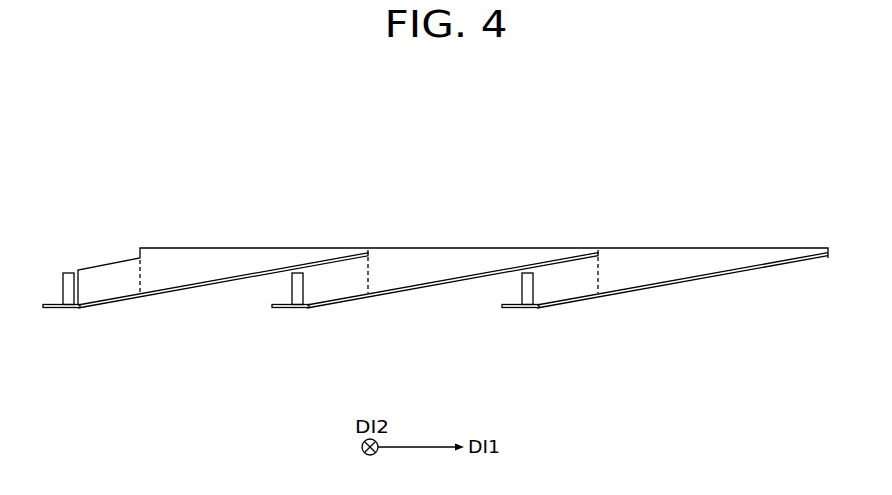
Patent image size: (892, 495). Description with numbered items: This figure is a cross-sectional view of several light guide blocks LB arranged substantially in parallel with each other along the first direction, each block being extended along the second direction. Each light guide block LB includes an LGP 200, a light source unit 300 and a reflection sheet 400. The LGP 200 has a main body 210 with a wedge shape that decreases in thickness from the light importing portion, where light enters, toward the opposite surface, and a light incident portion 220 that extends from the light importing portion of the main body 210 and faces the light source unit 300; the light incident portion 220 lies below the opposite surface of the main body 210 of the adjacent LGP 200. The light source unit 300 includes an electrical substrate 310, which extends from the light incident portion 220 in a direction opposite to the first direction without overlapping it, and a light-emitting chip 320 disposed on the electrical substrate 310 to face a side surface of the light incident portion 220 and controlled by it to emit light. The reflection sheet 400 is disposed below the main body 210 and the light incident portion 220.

The light guide block LB is at (430, 335).
The reflection sheet 400 is at (205, 282).
The light guide plate 200 is at (453, 322).
The main body 210 is at (165, 288).
The light incident portion 220 is at (117, 298).
The light source unit 300 is at (68, 332).
The electrical substrate 310 is at (60, 308).
The light-emitting chip 320 is at (32, 358).